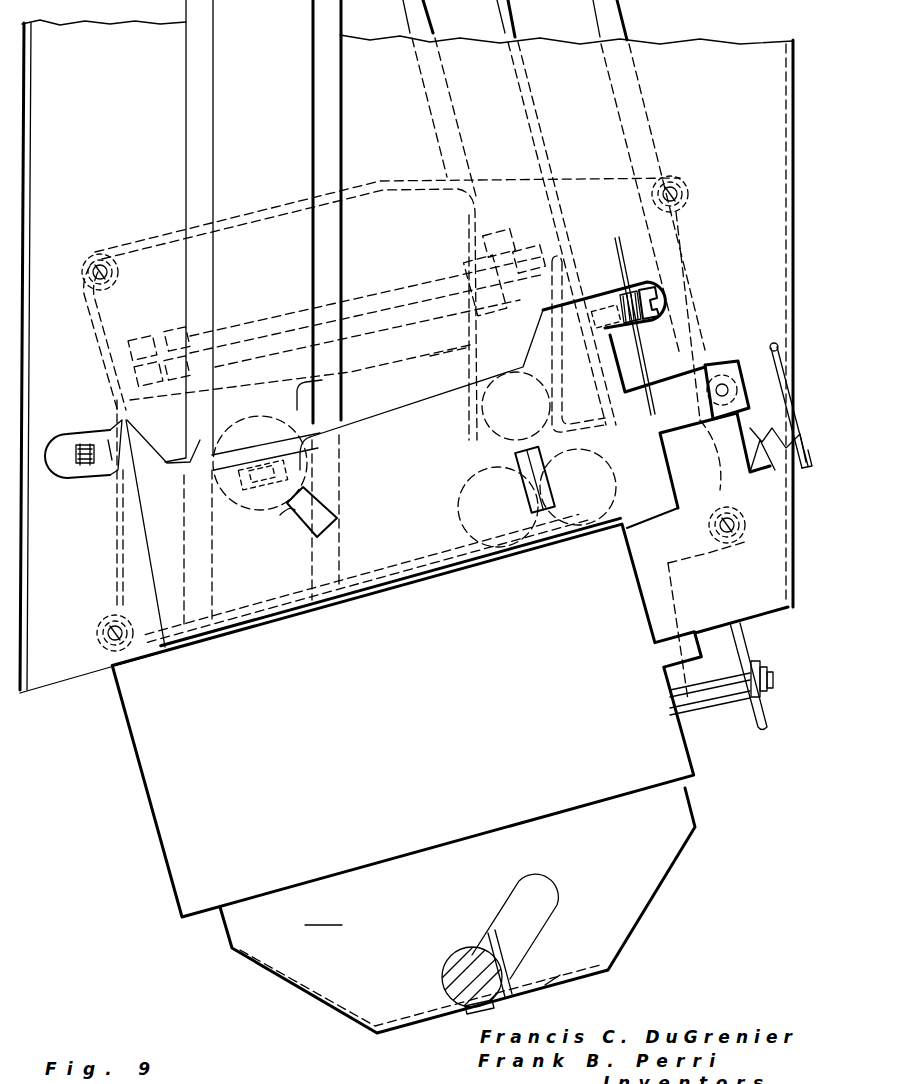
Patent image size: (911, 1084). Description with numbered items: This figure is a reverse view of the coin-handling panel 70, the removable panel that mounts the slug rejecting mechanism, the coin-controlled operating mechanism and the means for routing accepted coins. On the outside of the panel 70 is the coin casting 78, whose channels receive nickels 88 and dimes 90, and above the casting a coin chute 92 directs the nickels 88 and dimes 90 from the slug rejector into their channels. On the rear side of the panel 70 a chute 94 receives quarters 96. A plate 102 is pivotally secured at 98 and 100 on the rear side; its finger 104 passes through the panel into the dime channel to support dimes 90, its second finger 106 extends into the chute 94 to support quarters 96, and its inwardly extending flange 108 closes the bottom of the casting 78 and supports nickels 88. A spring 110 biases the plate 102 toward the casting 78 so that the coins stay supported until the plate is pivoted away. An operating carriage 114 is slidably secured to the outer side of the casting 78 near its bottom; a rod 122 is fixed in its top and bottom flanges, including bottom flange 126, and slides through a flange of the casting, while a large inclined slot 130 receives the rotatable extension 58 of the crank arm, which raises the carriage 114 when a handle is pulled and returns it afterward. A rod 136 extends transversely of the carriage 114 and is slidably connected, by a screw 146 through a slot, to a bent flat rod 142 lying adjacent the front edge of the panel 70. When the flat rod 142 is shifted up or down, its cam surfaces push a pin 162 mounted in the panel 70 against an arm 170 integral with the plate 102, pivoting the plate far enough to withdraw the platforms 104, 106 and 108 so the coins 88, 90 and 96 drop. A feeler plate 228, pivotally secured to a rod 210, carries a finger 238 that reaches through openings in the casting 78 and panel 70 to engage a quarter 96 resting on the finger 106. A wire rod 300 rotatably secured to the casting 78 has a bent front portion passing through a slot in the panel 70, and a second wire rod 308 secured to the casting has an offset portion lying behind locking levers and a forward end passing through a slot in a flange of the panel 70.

The rotatable extension 58 is at (448, 960).
The panel 70 is at (70, 688).
The coin casting 78 is at (384, 652).
The nickels 88 is at (462, 492).
The dimes 90 is at (470, 390).
The coin chute 92 is at (617, 32).
The chute 94 is at (202, 129).
The quarters 96 is at (262, 418).
The pivot 98 is at (90, 435).
The pivot 100 is at (605, 295).
The plate 102 is at (147, 532).
The finger 104 is at (512, 455).
The second finger 106 is at (300, 516).
The flange 108 is at (378, 580).
The spring 110 is at (650, 342).
The operating carriage 114 is at (457, 910).
The rod 122 is at (500, 945).
The bottom flange 126 is at (555, 980).
The inclined slot 130 is at (520, 887).
The rod 136 is at (728, 700).
The flat rod 142 is at (750, 633).
The screw 146 is at (772, 677).
The pin 162 is at (705, 392).
The arm 170 is at (670, 385).
The rod 210 is at (412, 268).
The feeler plate 228 is at (447, 352).
The finger 238 is at (300, 470).
The wire rod 300 is at (752, 468).
The second wire rod 308 is at (770, 340).